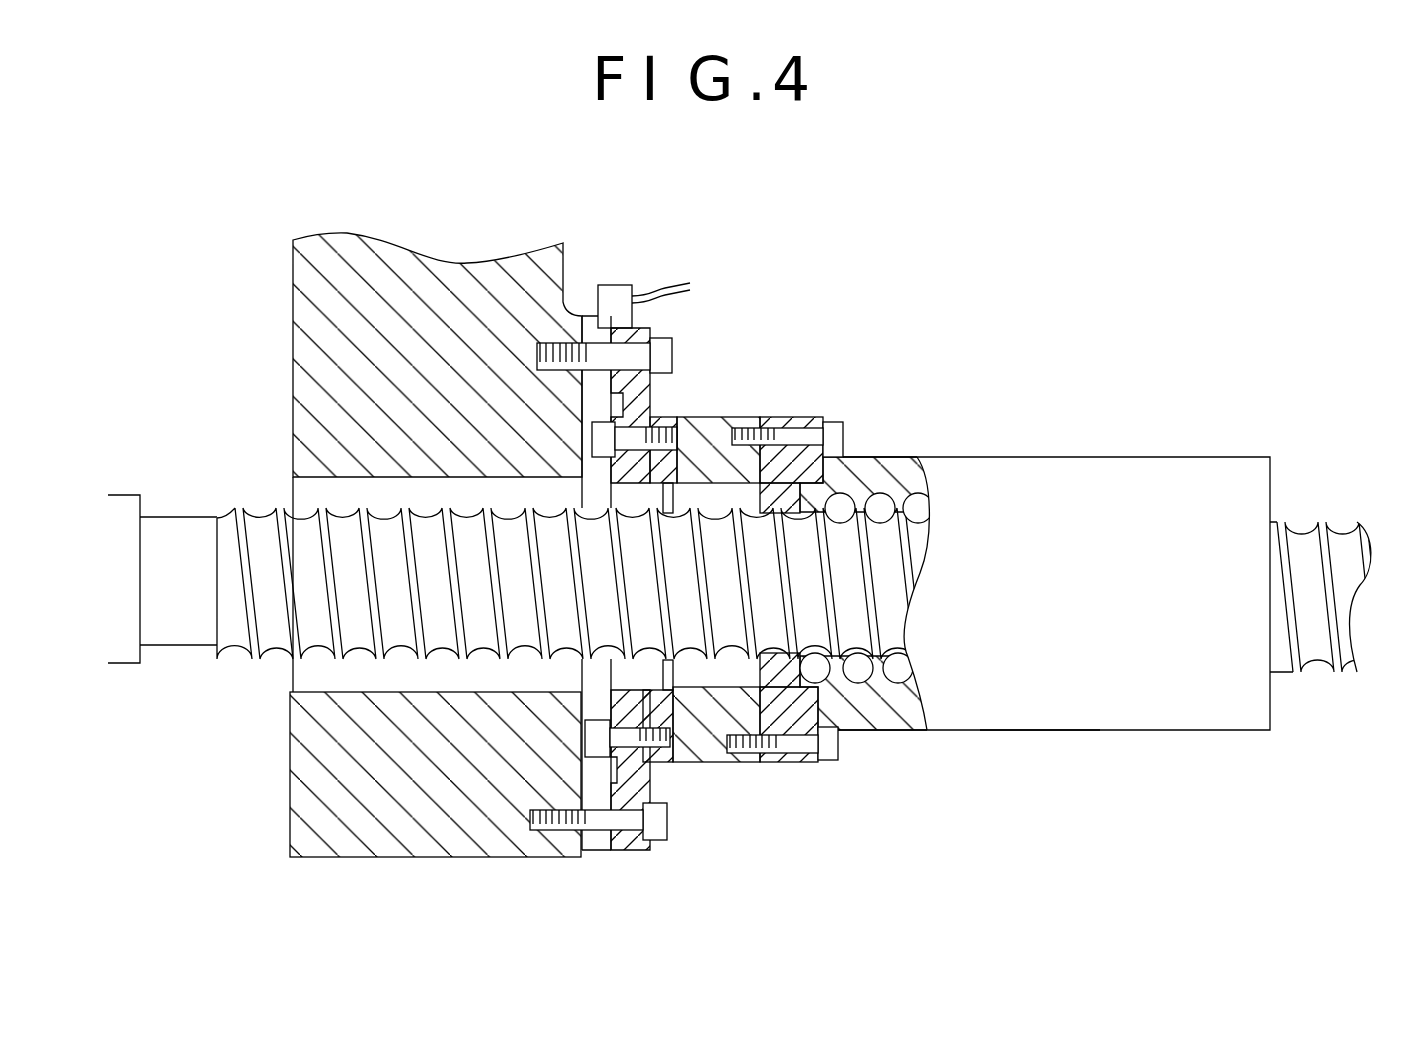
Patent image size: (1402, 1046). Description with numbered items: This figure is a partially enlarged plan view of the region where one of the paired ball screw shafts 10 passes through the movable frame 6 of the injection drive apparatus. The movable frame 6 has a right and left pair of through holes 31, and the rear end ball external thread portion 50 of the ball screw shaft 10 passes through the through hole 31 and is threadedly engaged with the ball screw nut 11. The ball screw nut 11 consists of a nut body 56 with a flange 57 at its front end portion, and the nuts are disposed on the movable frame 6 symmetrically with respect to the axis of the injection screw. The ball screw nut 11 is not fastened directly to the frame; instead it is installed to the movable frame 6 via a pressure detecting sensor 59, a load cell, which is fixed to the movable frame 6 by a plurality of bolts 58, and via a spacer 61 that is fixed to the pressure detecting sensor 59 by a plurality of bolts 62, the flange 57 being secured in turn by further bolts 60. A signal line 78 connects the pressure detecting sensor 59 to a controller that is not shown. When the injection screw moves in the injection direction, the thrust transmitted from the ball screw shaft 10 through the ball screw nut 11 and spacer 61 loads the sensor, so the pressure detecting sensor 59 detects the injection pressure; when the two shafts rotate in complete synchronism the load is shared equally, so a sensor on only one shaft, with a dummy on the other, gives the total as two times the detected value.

The movable frame 6 is at (425, 857).
The ball screw shaft 10 is at (120, 665).
The through hole 31 is at (335, 679).
The nut body 56 is at (1062, 478).
The flange 57 is at (806, 428).
The bolts 58 is at (667, 818).
The pressure detecting sensor 59 is at (608, 850).
The bolt 60 is at (625, 435).
The spacer 61 is at (732, 763).
The bolts 62 is at (843, 443).
The signal line 78 is at (656, 285).
The rear end ball external thread portion 50 is at (1290, 657).
The ball screw nut 11 is at (1031, 731).